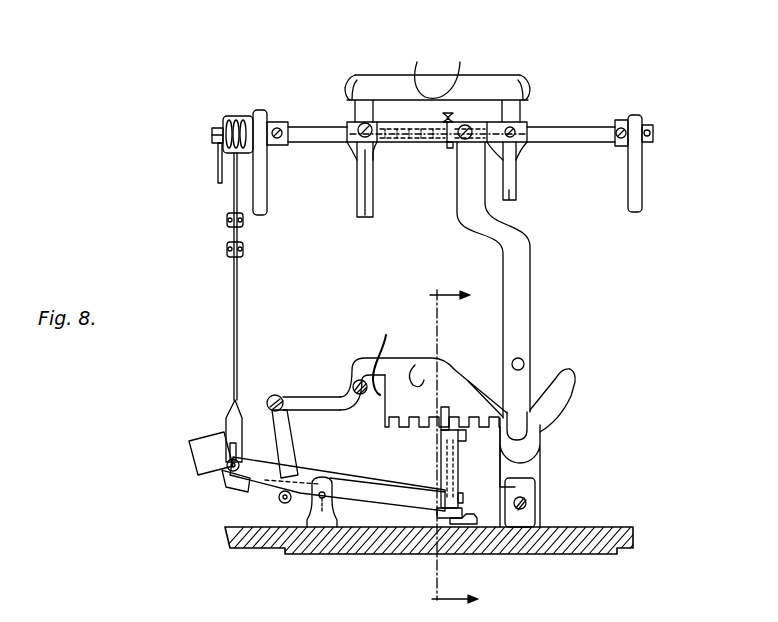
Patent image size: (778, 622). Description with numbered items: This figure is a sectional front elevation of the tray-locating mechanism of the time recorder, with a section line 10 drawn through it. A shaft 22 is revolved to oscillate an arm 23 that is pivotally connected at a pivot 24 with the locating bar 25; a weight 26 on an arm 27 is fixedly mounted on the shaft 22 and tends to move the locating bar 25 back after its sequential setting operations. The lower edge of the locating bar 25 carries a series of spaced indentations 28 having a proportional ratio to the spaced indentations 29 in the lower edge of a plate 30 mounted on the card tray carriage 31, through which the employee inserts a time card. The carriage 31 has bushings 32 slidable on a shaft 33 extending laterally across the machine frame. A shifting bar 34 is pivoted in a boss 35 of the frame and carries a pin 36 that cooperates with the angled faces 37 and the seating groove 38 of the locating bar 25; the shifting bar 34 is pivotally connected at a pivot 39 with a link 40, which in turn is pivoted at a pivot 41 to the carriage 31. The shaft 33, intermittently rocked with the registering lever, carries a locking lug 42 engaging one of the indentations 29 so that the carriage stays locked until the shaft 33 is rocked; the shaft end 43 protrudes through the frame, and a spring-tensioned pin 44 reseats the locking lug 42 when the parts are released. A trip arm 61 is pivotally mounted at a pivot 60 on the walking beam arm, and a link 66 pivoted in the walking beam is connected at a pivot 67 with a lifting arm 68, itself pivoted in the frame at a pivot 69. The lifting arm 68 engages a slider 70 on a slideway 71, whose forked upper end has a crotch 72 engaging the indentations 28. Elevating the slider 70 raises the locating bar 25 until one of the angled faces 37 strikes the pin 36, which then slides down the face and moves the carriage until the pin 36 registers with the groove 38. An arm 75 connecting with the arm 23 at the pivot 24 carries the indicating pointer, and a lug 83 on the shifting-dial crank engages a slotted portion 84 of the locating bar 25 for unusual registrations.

The section line 10- 10 is at (466, 448).
The shaft 22 is at (279, 500).
The arm 23 is at (290, 446).
The pivot 24 is at (270, 396).
The locating bar 25 is at (447, 366).
The weight 26 is at (190, 441).
The arm 27 is at (230, 490).
The spaced indentations 28 is at (394, 428).
The spaced indentations 29 is at (437, 146).
The plate 30 is at (408, 146).
The card tray carriage 31 is at (527, 104).
The bushings 32 is at (357, 148).
The shaft 33 is at (568, 127).
The shifting bar 34 is at (531, 290).
The boss 35 is at (533, 502).
The pin 36 is at (525, 362).
The angled faces 37 is at (558, 392).
The seating groove 38 is at (541, 437).
The pivotal connection 39 is at (466, 126).
The link 40 is at (418, 78).
The pivotal connection 41 is at (358, 122).
The locking lug 42 is at (448, 112).
The protruding shaft end 43 is at (648, 143).
The pin 44 is at (648, 127).
The pivot 60 is at (223, 143).
The trip arm 61 is at (220, 175).
The link 66 is at (243, 288).
The pivotal connection 67 is at (225, 470).
The lifting arm 68 is at (347, 484).
The pivot 69 is at (321, 488).
The slider 70 is at (441, 442).
The slideway 71 is at (465, 441).
The crotch 72 is at (441, 412).
The arm 75 is at (415, 365).
The lug 83 is at (360, 395).
The slotted portion 84 is at (375, 358).